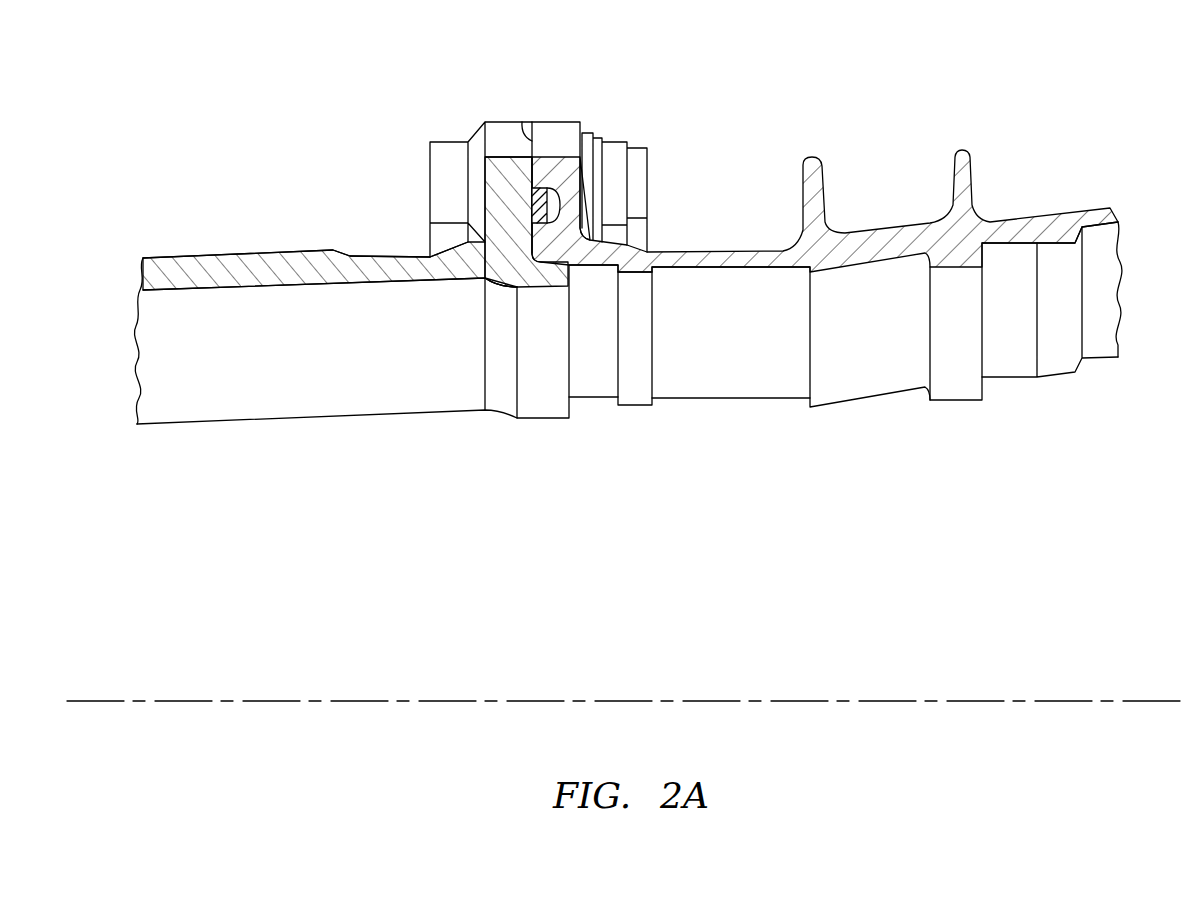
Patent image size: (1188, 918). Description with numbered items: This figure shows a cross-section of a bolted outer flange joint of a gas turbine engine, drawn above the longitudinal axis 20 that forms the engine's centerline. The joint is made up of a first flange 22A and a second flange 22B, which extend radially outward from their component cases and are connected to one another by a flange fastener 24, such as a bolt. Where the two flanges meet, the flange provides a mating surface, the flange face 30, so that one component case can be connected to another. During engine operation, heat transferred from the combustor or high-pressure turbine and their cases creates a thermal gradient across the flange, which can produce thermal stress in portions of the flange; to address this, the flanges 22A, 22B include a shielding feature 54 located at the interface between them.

The longitudinal axis 20 is at (1152, 700).
The first flange 22A is at (565, 122).
The second flange 22B is at (502, 122).
The flange fastener 24 is at (618, 136).
The flange face 30 is at (522, 122).
The shielding feature 54 is at (533, 210).